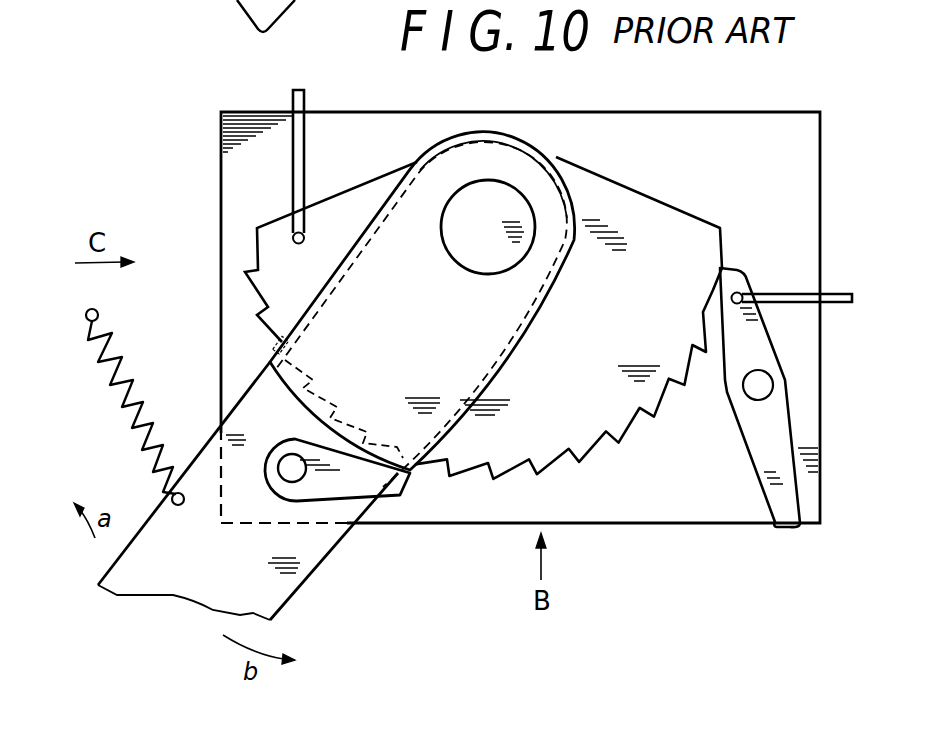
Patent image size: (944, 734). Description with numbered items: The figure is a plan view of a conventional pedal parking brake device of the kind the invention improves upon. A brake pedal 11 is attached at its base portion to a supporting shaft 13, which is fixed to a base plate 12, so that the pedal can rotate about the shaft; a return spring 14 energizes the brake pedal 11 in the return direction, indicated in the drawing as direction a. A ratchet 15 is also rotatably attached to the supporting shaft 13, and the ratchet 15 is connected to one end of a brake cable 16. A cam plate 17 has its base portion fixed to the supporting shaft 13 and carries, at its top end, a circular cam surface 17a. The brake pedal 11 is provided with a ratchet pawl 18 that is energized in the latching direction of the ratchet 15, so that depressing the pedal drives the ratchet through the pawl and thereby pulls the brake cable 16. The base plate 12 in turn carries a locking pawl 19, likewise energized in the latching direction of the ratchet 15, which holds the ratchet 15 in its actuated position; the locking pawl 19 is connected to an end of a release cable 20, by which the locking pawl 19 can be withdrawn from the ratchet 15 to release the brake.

The brake pedal 11 is at (300, 571).
The base plate 12 is at (808, 172).
The supporting shaft 13 is at (492, 221).
The return spring 14 is at (116, 386).
The ratchet 15 is at (275, 243).
The brake cable 16 is at (296, 146).
The cam plate 17 is at (273, 363).
The circular cam surface 17a is at (303, 406).
The ratchet pawl 18 is at (393, 490).
The locking pawl 19 is at (783, 433).
The release cable 20 is at (840, 292).